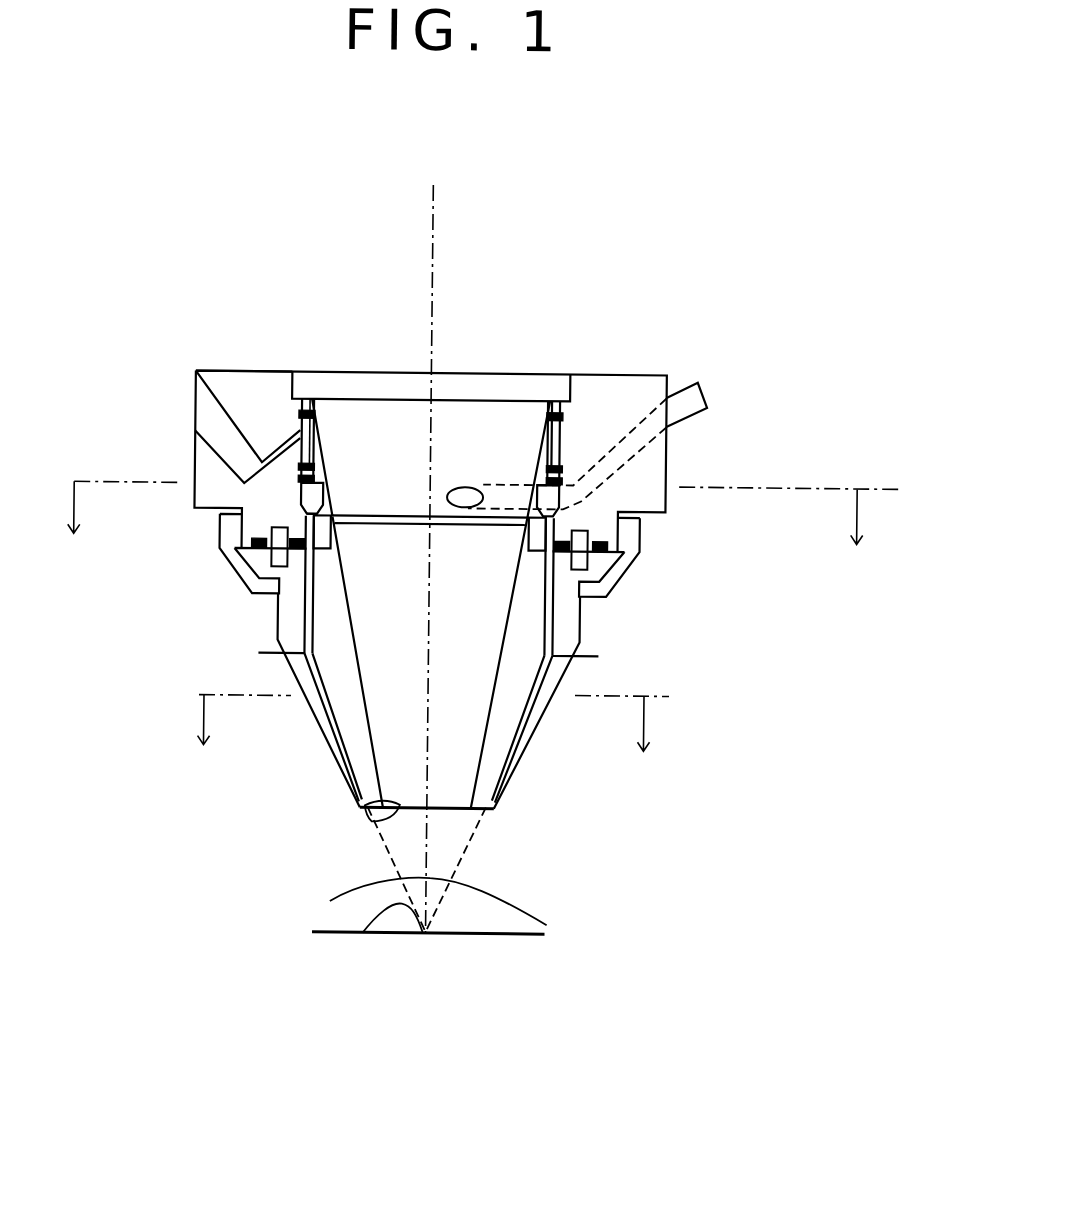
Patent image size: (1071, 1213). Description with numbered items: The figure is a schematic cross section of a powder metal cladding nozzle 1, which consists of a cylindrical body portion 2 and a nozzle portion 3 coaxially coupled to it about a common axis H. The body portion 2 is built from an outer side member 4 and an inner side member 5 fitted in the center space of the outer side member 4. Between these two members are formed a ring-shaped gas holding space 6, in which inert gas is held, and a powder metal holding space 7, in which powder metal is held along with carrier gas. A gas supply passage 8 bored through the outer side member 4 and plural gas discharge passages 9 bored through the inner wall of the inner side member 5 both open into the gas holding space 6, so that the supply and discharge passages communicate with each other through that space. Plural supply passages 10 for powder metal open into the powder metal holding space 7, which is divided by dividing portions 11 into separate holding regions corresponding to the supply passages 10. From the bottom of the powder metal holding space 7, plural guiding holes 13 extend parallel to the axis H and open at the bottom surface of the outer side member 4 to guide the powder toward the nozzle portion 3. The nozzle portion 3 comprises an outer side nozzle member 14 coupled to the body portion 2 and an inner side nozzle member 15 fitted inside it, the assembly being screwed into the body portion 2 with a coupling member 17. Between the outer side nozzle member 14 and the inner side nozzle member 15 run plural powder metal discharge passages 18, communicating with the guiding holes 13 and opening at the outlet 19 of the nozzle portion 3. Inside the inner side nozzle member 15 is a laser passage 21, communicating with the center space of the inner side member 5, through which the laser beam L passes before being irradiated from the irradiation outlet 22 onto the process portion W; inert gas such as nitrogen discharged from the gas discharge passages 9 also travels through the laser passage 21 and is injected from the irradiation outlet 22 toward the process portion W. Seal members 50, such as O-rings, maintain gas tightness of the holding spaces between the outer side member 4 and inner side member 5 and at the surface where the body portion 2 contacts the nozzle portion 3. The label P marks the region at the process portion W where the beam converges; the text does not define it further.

The powder metal cladding nozzle 1 is at (815, 153).
The body portion 2 is at (617, 372).
The nozzle portion 3 is at (581, 652).
The outer side member 4 is at (255, 385).
The inner side member 5 is at (485, 392).
The gas holding space 6 is at (296, 429).
The powder metal holding space 7 is at (296, 518).
The gas supply passage 8 is at (201, 417).
The gas discharge passages 9 is at (306, 450).
The supply passages 10 is at (462, 497).
The dividing portions 11 is at (544, 499).
The guiding holes 13 is at (317, 524).
The outer side nozzle member 14 is at (324, 713).
The inner side nozzle member 15 is at (506, 716).
The coupling member 17 is at (228, 537).
The powder metal discharge passages 18 is at (259, 654).
The outlet 19 is at (399, 803).
The laser passage 21 is at (462, 622).
The irradiation outlet 22 is at (459, 810).
The seal member 50 is at (257, 540).
The axis H is at (431, 541).
The laser beam L is at (550, 924).
The plasma P is at (333, 902).
The process portion W is at (366, 934).